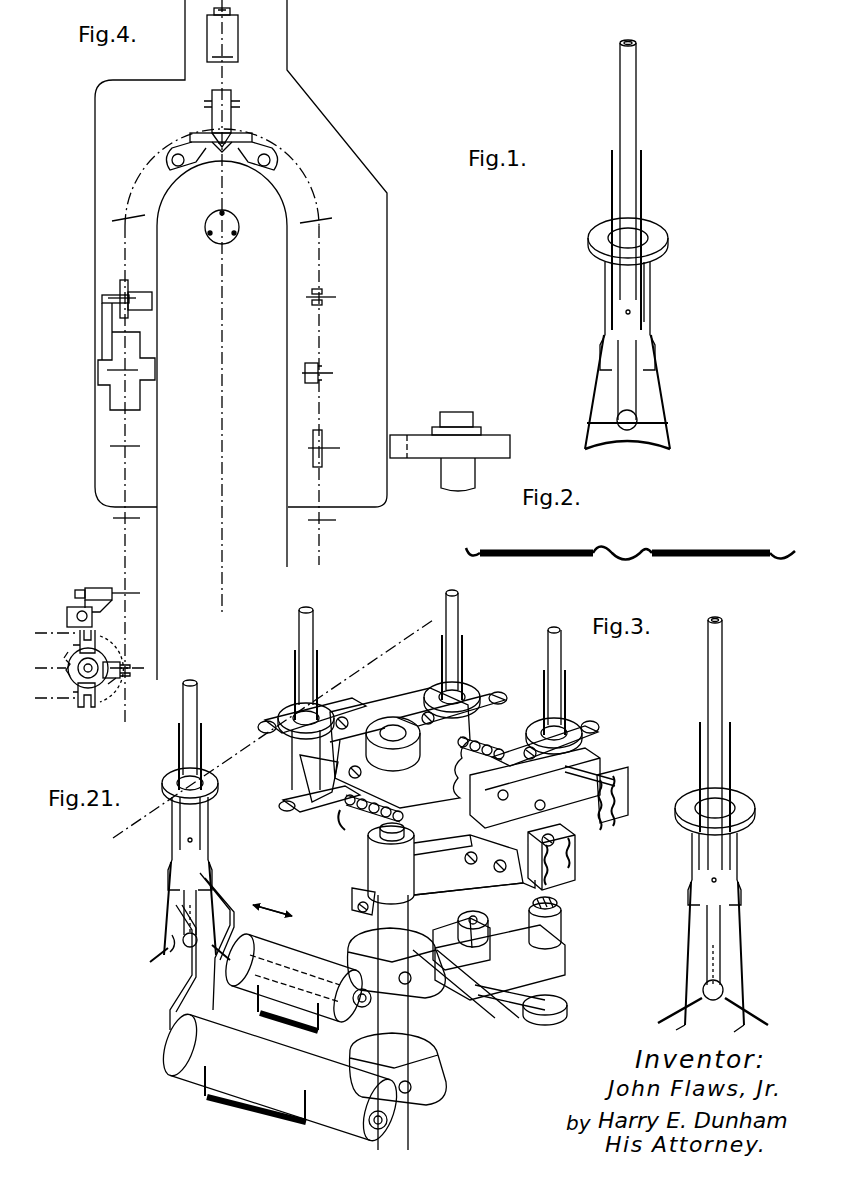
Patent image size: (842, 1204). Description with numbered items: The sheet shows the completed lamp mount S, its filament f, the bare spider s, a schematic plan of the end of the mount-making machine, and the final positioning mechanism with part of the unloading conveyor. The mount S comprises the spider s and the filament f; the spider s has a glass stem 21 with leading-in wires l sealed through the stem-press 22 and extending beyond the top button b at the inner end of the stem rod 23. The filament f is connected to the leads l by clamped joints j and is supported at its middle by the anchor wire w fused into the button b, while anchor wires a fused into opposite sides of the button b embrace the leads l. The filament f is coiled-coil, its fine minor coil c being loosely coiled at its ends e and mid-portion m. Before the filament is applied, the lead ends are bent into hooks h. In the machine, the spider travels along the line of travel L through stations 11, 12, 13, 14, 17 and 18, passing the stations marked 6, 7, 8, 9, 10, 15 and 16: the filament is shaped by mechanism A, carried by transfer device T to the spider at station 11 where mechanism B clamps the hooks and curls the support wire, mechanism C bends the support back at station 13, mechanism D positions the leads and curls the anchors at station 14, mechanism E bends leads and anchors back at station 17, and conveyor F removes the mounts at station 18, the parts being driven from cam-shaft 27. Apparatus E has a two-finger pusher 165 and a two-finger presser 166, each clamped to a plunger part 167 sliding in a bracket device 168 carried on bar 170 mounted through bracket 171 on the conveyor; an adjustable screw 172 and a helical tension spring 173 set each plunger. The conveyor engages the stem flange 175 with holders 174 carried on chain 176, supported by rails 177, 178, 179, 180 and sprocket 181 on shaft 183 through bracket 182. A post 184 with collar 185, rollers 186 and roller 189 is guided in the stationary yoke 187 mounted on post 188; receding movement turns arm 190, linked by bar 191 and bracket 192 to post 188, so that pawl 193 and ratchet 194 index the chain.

In FIG. 4, the filament positioning and shaping mechanism A is at (242, 38).
In FIG. 4, the transfer device T is at (234, 97).
In FIG. 4, the clamping and support-positioning mechanism B is at (256, 142).
In FIG. 4, the support-wire bending mechanism C is at (101, 298).
In FIG. 4, the lead-positioning and anchor-curling mechanism D is at (97, 369).
In FIG. 4, the lead and anchor wire positioning apparatus E is at (86, 587).
In FIG. 21, the lead and anchor wire positioning apparatus E is at (118, 1072).
In FIG. 4, the unloading conveyor F is at (72, 647).
In FIG. 21, the unloading conveyor F is at (382, 705).
In FIG. 4, the line of travel L is at (318, 565).
In FIG. 21, the line of travel L is at (250, 745).
In FIG. 4, the station 6 is at (322, 522).
In FIG. 4, the station 7 is at (324, 450).
In FIG. 4, the station 8 is at (324, 371).
In FIG. 4, the station 9 is at (322, 300).
In FIG. 4, the station 10 is at (320, 222).
In FIG. 4, the station 11 is at (232, 138).
In FIG. 4, the station 12 is at (126, 218).
In FIG. 4, the station 13 is at (116, 284).
In FIG. 4, the station 14 is at (118, 368).
In FIG. 4, the station 15 is at (118, 445).
In FIG. 4, the station 16 is at (118, 518).
In FIG. 4, the station 17 is at (118, 592).
In FIG. 4, the station 18 is at (113, 680).
In FIG. 4, the cam-shaft 27 is at (440, 482).
In FIG. 1, the stem flange 175 is at (590, 248).
In FIG. 21, the stem flange 175 is at (168, 776).
In FIG. 1, the glass stem 21 is at (603, 280).
In FIG. 3, the glass stem 21 is at (692, 862).
In FIG. 1, the stem-press 22 is at (600, 323).
In FIG. 3, the stem-press 22 is at (689, 890).
In FIG. 21, the stem-press 22 is at (172, 838).
In FIG. 1, the stem rod 23 is at (617, 392).
In FIG. 3, the stem rod 23 is at (722, 945).
In FIG. 21, the stem rod 23 is at (182, 880).
In FIG. 1, the leading-in wires l is at (596, 360).
In FIG. 3, the leading-in wires l is at (688, 926).
In FIG. 21, the leading-in wires l is at (170, 860).
In FIG. 1, the anchor wires a is at (600, 422).
In FIG. 3, the anchor wires a is at (683, 1010).
In FIG. 21, the anchor wires a is at (172, 906).
In FIG. 1, the top button b is at (635, 418).
In FIG. 3, the top button b is at (716, 1000).
In FIG. 1, the clamped joints j is at (584, 449).
In FIG. 1, the anchor wire (support) w is at (620, 447).
In FIG. 3, the anchor wire (support) w is at (708, 955).
In FIG. 21, the anchor wire (support) w is at (182, 928).
In FIG. 1, the minor coil c is at (628, 449).
In FIG. 2, the minor coil c is at (700, 551).
In FIG. 1, the filament f is at (640, 447).
In FIG. 2, the filament f is at (670, 548).
In FIG. 21, the filament f is at (168, 948).
In FIG. 1, the spider s is at (680, 43).
In FIG. 3, the spider s is at (776, 620).
In FIG. 1, the lamp mount S is at (724, 43).
In FIG. 21, the lamp mount S is at (212, 784).
In FIG. 2, the filament ends e is at (470, 552).
In FIG. 2, the mid-portion m is at (624, 553).
In FIG. 3, the hooks h is at (682, 1026).
In FIG. 21, the two-finger pusher 165 is at (222, 906).
In FIG. 21, the two-finger presser 166 is at (188, 990).
In FIG. 21, the plunger part 167 is at (228, 966).
In FIG. 21, the bracket device 168 is at (310, 950).
In FIG. 21, the bar 170 is at (408, 1026).
In FIG. 21, the bracket 171 is at (368, 878).
In FIG. 21, the adjustable screw 172 is at (359, 1010).
In FIG. 21, the helical tension spring 173 is at (260, 1015).
In FIG. 21, the holders 174 is at (268, 718).
In FIG. 21, the chain 176 is at (492, 742).
In FIG. 21, the rail 177 is at (540, 880).
In FIG. 21, the rail 178 is at (576, 858).
In FIG. 21, the rail 179 is at (568, 826).
In FIG. 21, the rail 180 is at (618, 800).
In FIG. 21, the sprocket 181 is at (432, 768).
In FIG. 21, the bracket 182 is at (590, 770).
In FIG. 21, the shaft 183 is at (393, 726).
In FIG. 21, the post 184 is at (556, 903).
In FIG. 21, the collar 185 is at (557, 920).
In FIG. 21, the rollers 186 is at (455, 968).
In FIG. 21, the yoke 187 is at (560, 962).
In FIG. 21, the post 188 is at (562, 932).
In FIG. 21, the roller 189 is at (472, 985).
In FIG. 21, the arm 190 is at (357, 908).
In FIG. 21, the bar 191 is at (498, 1000).
In FIG. 21, the bracket 192 is at (530, 1020).
In FIG. 21, the pawl 193 is at (352, 902).
In FIG. 21, the ratchet 194 is at (366, 895).